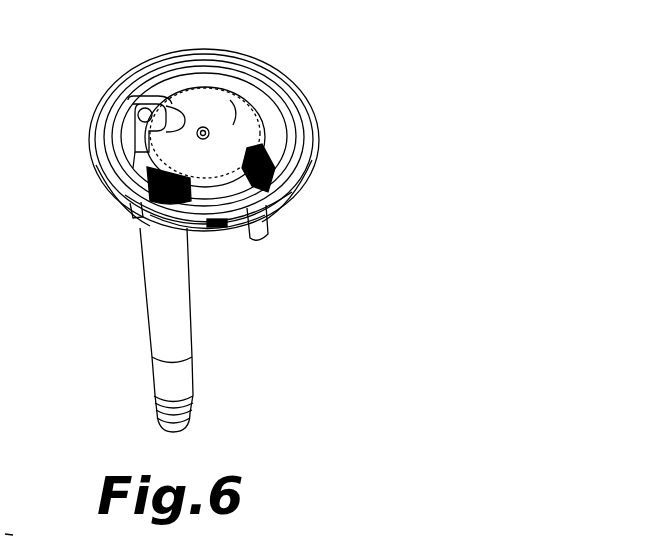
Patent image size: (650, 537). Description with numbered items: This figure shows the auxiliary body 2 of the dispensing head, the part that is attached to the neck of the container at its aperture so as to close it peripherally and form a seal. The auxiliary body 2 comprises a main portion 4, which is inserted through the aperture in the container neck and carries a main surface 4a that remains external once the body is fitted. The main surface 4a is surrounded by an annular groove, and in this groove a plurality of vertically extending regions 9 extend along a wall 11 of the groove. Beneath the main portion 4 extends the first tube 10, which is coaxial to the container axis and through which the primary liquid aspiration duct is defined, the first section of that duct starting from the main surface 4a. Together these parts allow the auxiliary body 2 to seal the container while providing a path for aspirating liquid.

The auxiliary body 2 is at (118, 244).
The main portion 4 is at (327, 142).
The main surface 4a is at (229, 128).
The vertically extending regions 9 is at (153, 184).
The first tube 10 is at (196, 332).
The wall 11 is at (223, 190).